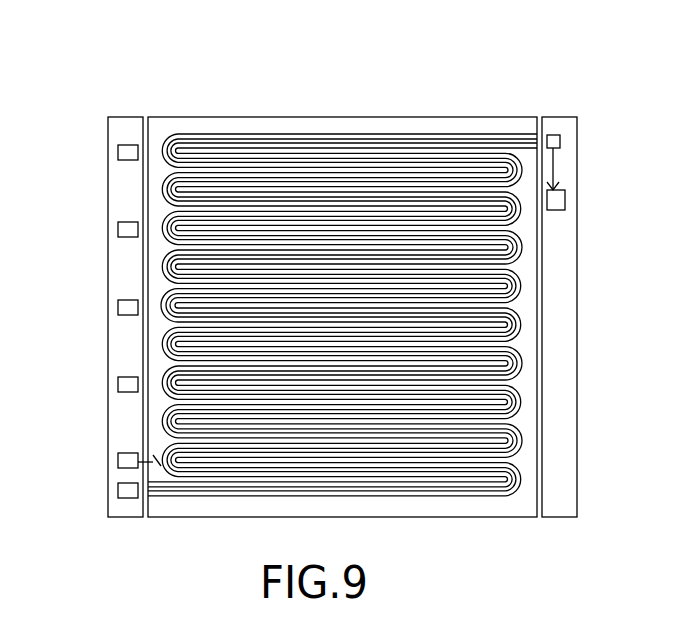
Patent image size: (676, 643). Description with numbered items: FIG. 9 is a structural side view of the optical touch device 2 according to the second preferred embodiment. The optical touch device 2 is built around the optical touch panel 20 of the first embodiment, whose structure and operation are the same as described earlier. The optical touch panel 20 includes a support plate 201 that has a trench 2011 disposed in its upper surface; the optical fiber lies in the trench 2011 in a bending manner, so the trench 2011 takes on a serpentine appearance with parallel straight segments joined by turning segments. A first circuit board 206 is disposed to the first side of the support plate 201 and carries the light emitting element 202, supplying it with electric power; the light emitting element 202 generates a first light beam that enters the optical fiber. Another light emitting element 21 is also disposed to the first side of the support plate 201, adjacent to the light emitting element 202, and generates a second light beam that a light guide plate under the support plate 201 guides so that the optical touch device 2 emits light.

The optical touch device 2 is at (553, 31).
The optical touch panel 20 is at (294, 278).
The support plate 201 is at (342, 288).
The trench 2011 is at (232, 126).
The first circuit board 206 is at (103, 315).
The another light emitting element 21 is at (128, 383).
The light emitting element 202 is at (125, 490).